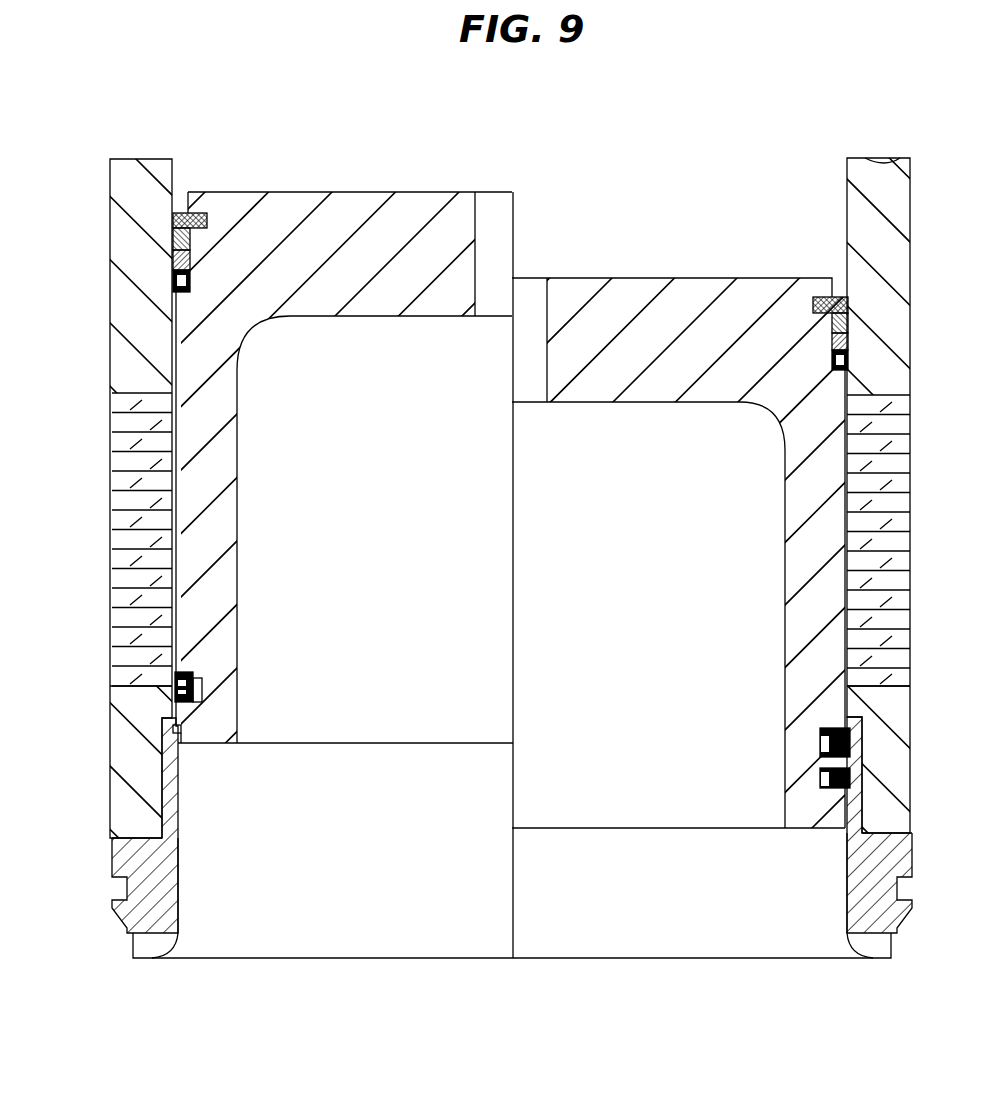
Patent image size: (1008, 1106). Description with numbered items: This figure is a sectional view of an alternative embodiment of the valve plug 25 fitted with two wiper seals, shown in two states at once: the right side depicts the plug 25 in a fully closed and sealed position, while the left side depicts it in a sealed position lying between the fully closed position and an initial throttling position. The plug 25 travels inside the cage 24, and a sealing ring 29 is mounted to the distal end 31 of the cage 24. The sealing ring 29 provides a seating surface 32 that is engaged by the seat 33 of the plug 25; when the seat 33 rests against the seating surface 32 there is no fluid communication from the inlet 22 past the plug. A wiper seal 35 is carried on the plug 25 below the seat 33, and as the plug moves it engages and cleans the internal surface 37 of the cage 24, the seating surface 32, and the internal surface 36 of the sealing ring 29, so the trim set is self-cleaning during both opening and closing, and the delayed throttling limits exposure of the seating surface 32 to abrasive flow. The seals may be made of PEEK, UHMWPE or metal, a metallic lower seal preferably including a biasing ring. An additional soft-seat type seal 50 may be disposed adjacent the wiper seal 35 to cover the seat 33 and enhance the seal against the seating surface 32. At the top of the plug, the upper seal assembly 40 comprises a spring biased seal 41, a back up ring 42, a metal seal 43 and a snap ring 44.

The inlet 22 is at (755, 1037).
The cage 24 is at (110, 512).
The valve plug 25 is at (380, 167).
The sealing ring 29 is at (172, 918).
The distal end of the cage 31 is at (113, 762).
The seating surface 32 is at (181, 730).
The seat 33 is at (177, 668).
The wiper seal 35 is at (202, 693).
The internal surface of the sealing ring 36 is at (178, 812).
The internal surface of the cage 37 is at (843, 800).
The upper seal assembly 40 is at (456, 244).
The spring biased seal 41 is at (173, 287).
The back up ring 42 is at (173, 259).
The metal seal 43 is at (173, 240).
The snap ring 44 is at (173, 216).
The soft-seat type seal 50 is at (193, 672).